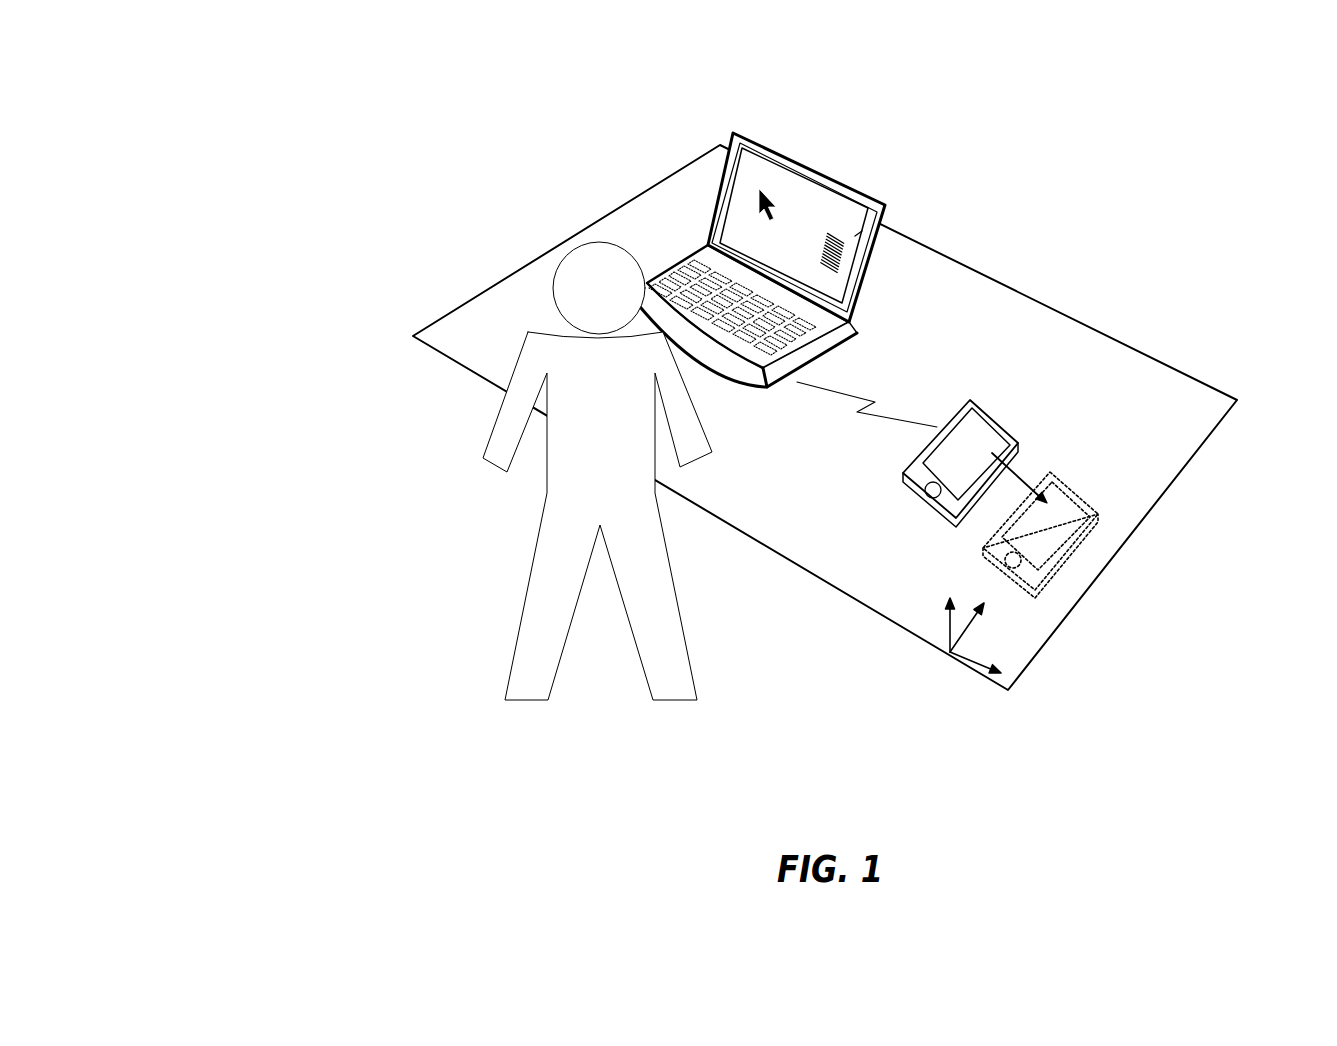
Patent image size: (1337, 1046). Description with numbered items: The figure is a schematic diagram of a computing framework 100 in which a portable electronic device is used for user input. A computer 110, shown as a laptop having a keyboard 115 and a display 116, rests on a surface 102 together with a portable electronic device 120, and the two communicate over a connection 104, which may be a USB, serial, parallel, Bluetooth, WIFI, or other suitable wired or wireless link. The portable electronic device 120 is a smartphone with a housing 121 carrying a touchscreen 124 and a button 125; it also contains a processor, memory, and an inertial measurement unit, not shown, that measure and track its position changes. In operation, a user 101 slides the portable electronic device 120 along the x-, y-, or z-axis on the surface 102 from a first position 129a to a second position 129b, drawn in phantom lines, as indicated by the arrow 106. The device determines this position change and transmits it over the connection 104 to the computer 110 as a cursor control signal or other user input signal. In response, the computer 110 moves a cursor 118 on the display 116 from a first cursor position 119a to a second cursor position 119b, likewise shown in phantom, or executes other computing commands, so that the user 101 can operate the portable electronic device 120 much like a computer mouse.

The computing framework 100 is at (303, 136).
The user 101 is at (525, 613).
The surface 102 is at (1202, 383).
The connection 104 is at (843, 391).
The arrow 106 is at (1023, 478).
The computer 110 is at (789, 242).
The keyboard 115 is at (690, 267).
The display 116 is at (757, 140).
The cursor 118 is at (760, 210).
The first cursor position 119a is at (793, 185).
The second cursor position 119b is at (858, 287).
The portable electronic device 120 is at (997, 504).
The housing 121 is at (1018, 447).
The touchscreen 124 is at (950, 418).
The button 125 is at (917, 488).
The first position 129a is at (963, 467).
The second position 129b is at (1056, 609).